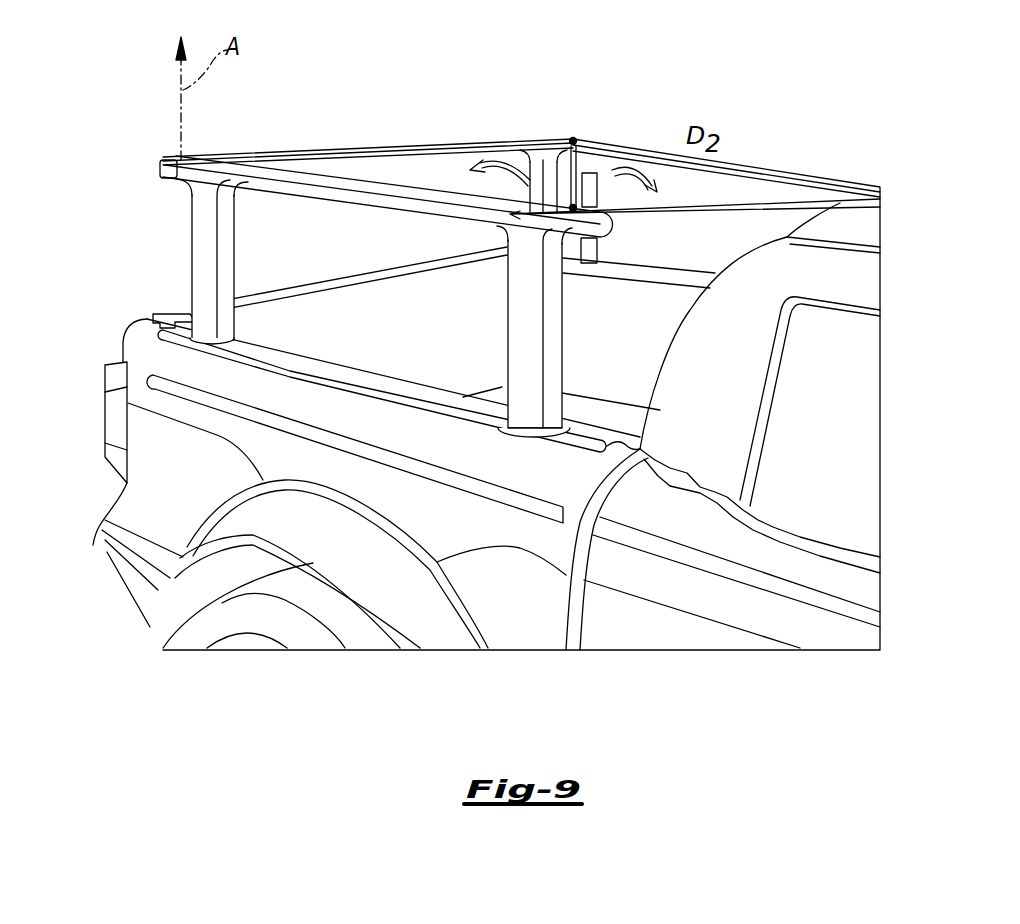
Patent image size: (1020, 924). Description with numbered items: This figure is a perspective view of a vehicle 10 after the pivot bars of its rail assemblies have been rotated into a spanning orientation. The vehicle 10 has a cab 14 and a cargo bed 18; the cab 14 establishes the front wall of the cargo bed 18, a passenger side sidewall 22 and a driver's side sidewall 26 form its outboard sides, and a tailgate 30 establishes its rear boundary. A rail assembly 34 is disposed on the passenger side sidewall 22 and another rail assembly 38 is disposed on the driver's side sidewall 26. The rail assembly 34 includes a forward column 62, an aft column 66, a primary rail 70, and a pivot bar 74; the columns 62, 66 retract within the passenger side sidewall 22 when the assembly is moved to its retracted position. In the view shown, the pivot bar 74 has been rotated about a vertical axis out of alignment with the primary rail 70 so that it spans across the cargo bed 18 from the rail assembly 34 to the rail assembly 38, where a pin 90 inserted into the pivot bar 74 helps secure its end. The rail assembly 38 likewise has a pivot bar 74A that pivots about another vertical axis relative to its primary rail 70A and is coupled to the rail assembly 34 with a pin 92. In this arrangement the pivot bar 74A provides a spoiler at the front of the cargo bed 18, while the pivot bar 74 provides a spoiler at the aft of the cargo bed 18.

The vehicle 10 is at (713, 598).
The cab 14 is at (628, 625).
The cargo bed 18 is at (157, 498).
The passenger side sidewall 22 is at (535, 545).
The driver's side sidewall 26 is at (640, 313).
The tailgate 30 is at (377, 327).
The rail assembly 34 is at (520, 318).
The rail assembly 38 is at (625, 155).
The forward column 62 is at (527, 370).
The aft column 66 is at (203, 304).
The primary rail 70 is at (400, 192).
The primary rail 70A is at (738, 172).
The pivot bar 74 is at (397, 150).
The pivot bar 74A is at (810, 200).
The pin 90 is at (573, 140).
The pin 92 is at (574, 206).